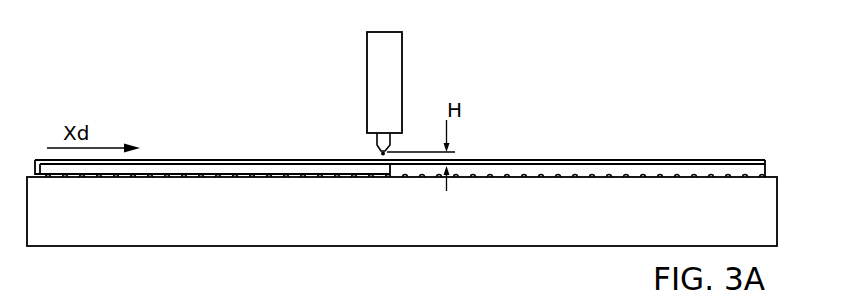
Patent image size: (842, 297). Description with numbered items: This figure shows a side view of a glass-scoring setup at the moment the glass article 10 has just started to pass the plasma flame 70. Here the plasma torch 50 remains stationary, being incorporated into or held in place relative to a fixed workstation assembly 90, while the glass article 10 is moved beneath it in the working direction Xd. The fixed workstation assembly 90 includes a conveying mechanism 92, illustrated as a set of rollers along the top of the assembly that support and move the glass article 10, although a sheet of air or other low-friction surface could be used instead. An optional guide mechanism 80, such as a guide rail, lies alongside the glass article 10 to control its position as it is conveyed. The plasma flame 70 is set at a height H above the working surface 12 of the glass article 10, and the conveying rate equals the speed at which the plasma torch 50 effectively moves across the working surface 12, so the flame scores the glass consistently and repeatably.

The glass article 10 is at (218, 164).
The working surface 12 is at (275, 156).
The plasma torch 50 is at (367, 44).
The plasma flame 70 is at (381, 154).
The guide mechanism 80 is at (565, 160).
The fixed workstation assembly 90 is at (143, 222).
The conveying mechanism 92 is at (665, 176).